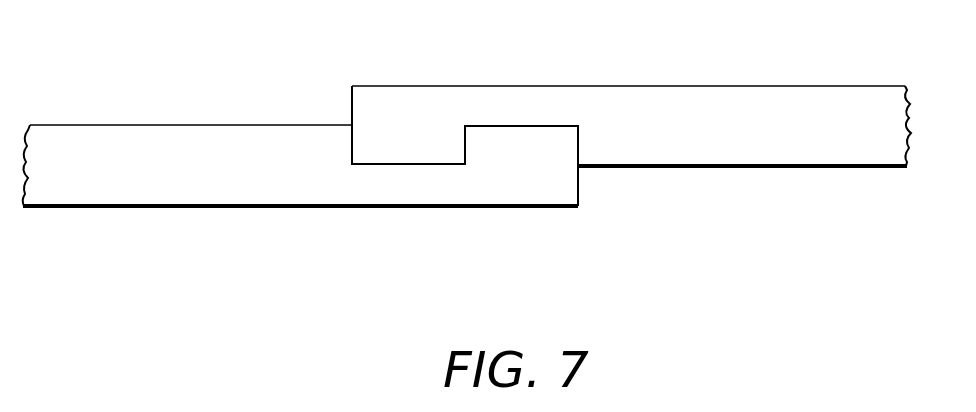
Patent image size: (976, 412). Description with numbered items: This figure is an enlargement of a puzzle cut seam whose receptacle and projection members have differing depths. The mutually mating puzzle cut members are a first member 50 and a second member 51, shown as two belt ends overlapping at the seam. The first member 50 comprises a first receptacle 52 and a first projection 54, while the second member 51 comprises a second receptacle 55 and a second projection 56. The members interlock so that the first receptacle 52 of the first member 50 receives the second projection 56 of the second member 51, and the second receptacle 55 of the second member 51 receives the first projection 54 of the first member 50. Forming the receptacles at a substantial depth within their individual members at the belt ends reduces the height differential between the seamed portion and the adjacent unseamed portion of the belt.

The first member 50 is at (763, 125).
The second member 51 is at (182, 165).
The first receptacle 52 is at (530, 125).
The first projection 54 is at (397, 130).
The second receptacle 55 is at (413, 165).
The second projection 56 is at (580, 185).